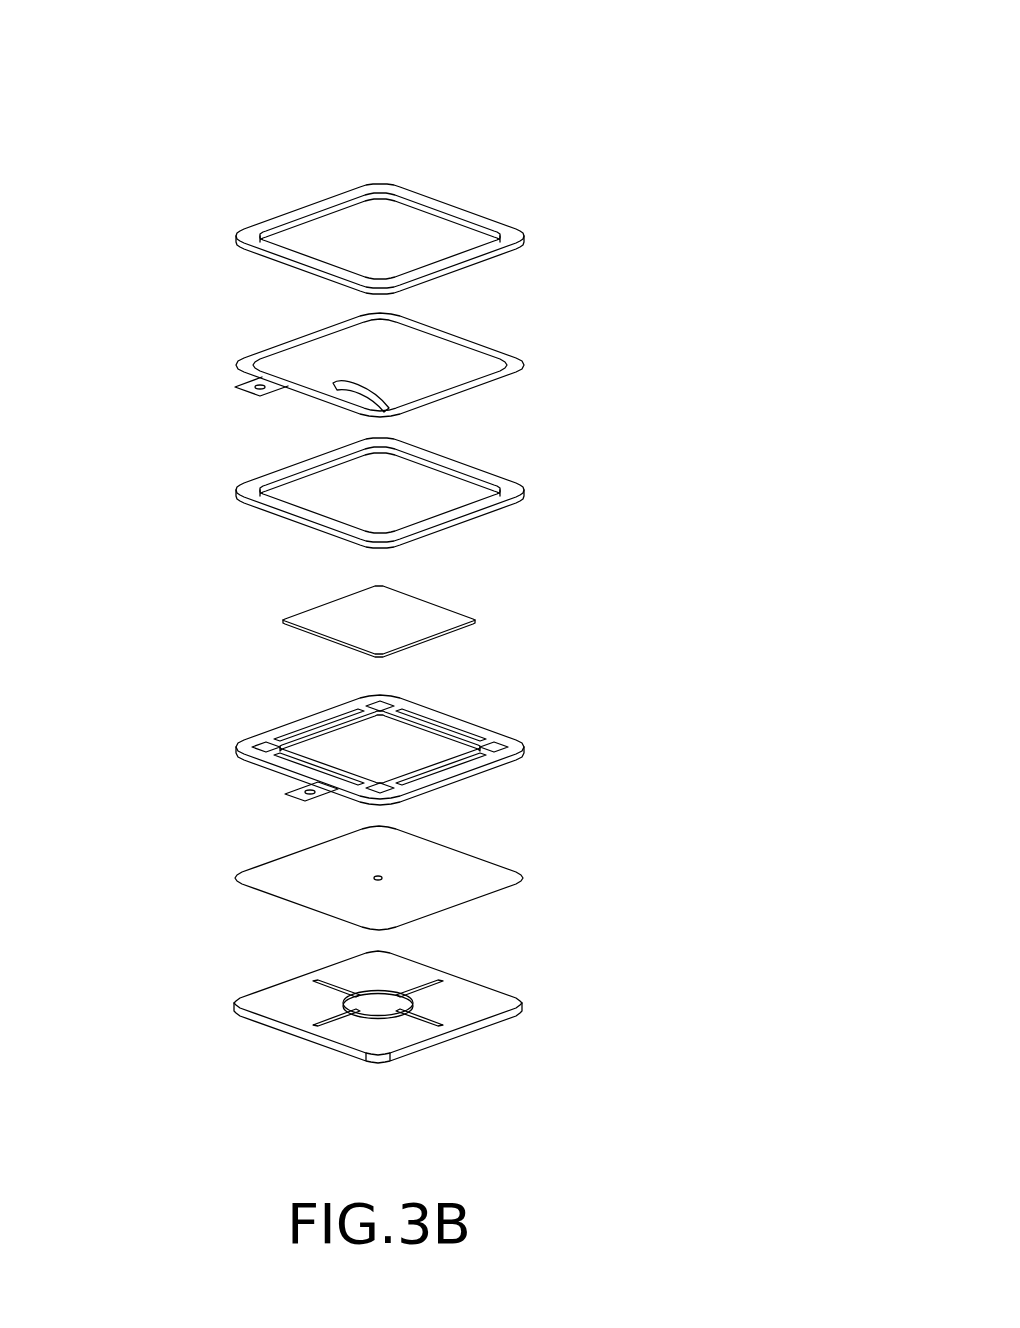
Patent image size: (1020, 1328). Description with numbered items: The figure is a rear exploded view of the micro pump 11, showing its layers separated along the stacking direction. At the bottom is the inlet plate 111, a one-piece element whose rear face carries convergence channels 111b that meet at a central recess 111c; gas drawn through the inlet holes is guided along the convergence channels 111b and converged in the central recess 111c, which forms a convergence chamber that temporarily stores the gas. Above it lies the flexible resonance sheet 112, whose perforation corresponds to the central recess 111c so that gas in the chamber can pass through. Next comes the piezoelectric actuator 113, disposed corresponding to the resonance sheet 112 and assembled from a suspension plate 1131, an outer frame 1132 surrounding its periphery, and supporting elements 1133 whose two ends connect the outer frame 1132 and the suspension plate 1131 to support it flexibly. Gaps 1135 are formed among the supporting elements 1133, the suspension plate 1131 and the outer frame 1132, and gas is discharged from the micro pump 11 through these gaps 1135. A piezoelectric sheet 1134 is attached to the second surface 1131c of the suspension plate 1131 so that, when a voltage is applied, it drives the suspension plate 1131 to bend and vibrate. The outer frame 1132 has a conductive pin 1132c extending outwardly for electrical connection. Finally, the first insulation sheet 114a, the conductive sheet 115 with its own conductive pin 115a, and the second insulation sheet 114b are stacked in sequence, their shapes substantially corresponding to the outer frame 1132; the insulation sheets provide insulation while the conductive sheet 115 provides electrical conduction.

The micro pump 11 is at (623, 110).
The inlet plate 111 is at (541, 978).
The convergence channel 111b is at (417, 1030).
The central recess 111c is at (365, 1005).
The resonance sheet 112 is at (534, 855).
The piezoelectric actuator 113 is at (628, 613).
The suspension plate 1131 is at (456, 741).
The second surface 1131c is at (330, 750).
The outer frame 1132 is at (503, 744).
The conductive pin 1132c is at (302, 790).
The supporting element 1133 is at (460, 780).
The piezoelectric sheet 1134 is at (487, 600).
The gap 1135 is at (402, 708).
The first insulation sheet 114a is at (536, 461).
The second insulation sheet 114b is at (538, 203).
The conductive sheet 115 is at (536, 338).
The conductive pin 115a is at (243, 387).